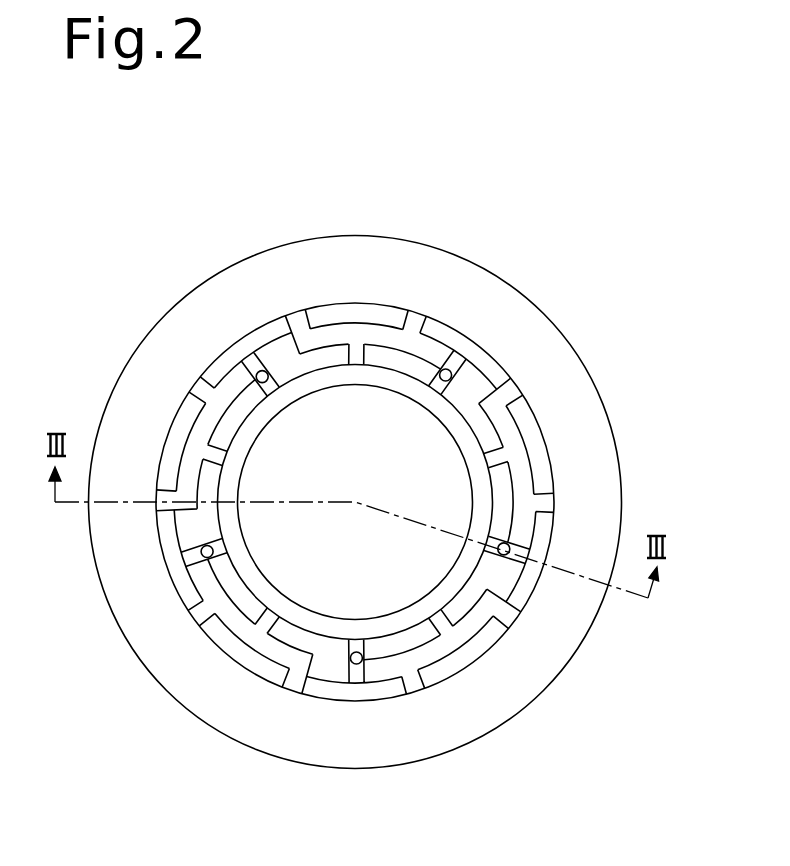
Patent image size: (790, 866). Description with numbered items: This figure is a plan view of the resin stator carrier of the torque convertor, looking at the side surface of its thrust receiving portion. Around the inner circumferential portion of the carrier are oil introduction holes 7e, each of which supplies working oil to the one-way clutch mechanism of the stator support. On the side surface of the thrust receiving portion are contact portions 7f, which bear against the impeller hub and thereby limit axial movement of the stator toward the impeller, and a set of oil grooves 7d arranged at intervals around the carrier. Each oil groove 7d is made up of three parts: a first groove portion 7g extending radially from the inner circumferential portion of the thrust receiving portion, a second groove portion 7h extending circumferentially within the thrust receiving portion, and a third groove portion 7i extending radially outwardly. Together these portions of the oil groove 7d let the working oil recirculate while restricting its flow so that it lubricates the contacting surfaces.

The oil groove 7d is at (617, 150).
The oil introduction hole 7e is at (258, 368).
The contact portion 7f is at (492, 380).
The first groove portion 7g is at (357, 348).
The second groove portion 7h is at (385, 330).
The third groove portion 7i is at (415, 320).